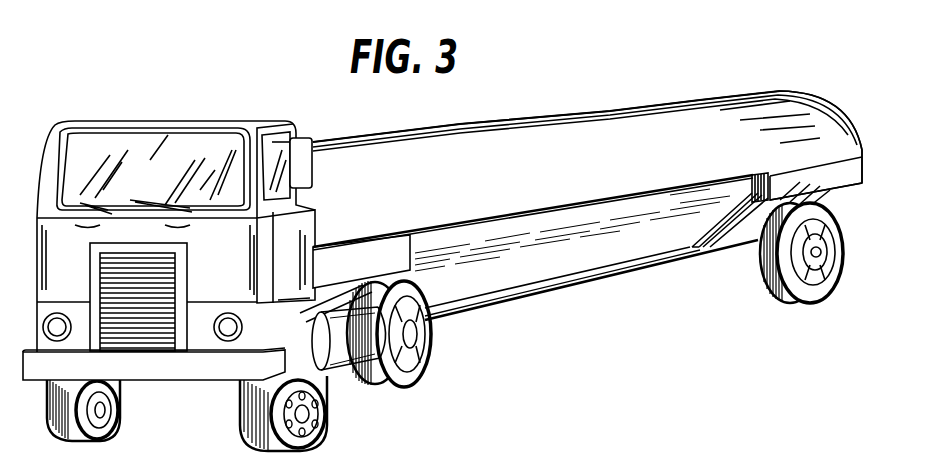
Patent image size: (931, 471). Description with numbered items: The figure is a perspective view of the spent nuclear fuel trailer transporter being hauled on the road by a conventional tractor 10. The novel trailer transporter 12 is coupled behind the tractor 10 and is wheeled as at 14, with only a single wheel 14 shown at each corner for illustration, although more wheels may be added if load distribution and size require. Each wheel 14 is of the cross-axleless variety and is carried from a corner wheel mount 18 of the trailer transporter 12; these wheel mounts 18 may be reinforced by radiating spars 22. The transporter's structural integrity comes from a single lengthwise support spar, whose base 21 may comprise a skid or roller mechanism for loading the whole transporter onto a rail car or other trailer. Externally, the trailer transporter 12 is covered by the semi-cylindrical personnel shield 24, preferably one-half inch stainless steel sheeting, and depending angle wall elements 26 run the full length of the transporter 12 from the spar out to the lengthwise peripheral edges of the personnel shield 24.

The tractor 10 is at (162, 80).
The trailer transporter 12 is at (580, 297).
The wheel 14 is at (824, 300).
The corner wheel mount 18 is at (846, 172).
The base 21 is at (665, 264).
The radiating spars 22 is at (830, 193).
The personnel shield 24 is at (560, 123).
The angle wall elements 26 is at (536, 290).